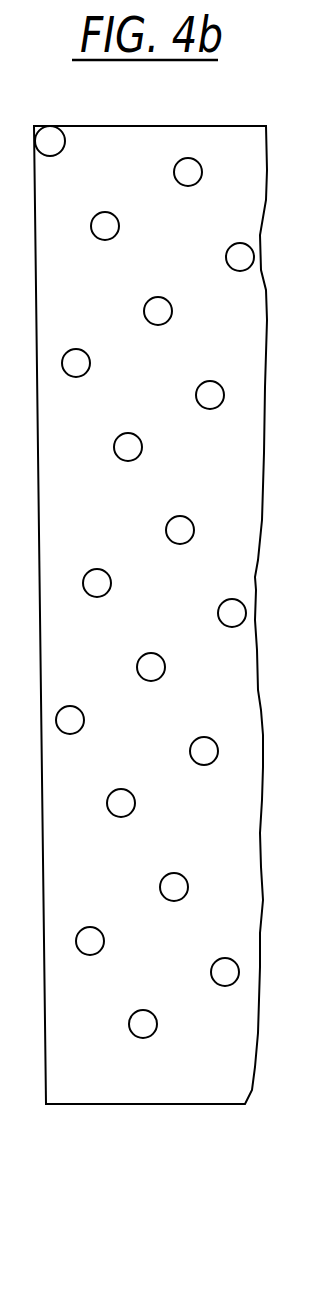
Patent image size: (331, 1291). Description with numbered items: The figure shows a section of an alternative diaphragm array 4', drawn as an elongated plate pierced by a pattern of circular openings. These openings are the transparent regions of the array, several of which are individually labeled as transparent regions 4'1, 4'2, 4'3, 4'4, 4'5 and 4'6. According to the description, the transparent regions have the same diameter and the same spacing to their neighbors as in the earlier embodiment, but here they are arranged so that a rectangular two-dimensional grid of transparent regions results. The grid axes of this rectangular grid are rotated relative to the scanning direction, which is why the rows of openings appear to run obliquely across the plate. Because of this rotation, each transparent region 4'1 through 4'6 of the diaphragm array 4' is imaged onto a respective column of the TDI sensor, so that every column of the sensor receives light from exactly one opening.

The diaphragm array 4' is at (150, 594).
The transparent region 4'1 is at (67, 117).
The transparent region 4'2 is at (76, 689).
The transparent region 4'3 is at (80, 337).
The transparent region 4'4 is at (93, 910).
The transparent region 4'5 is at (96, 556).
The transparent region 4'6 is at (112, 201).